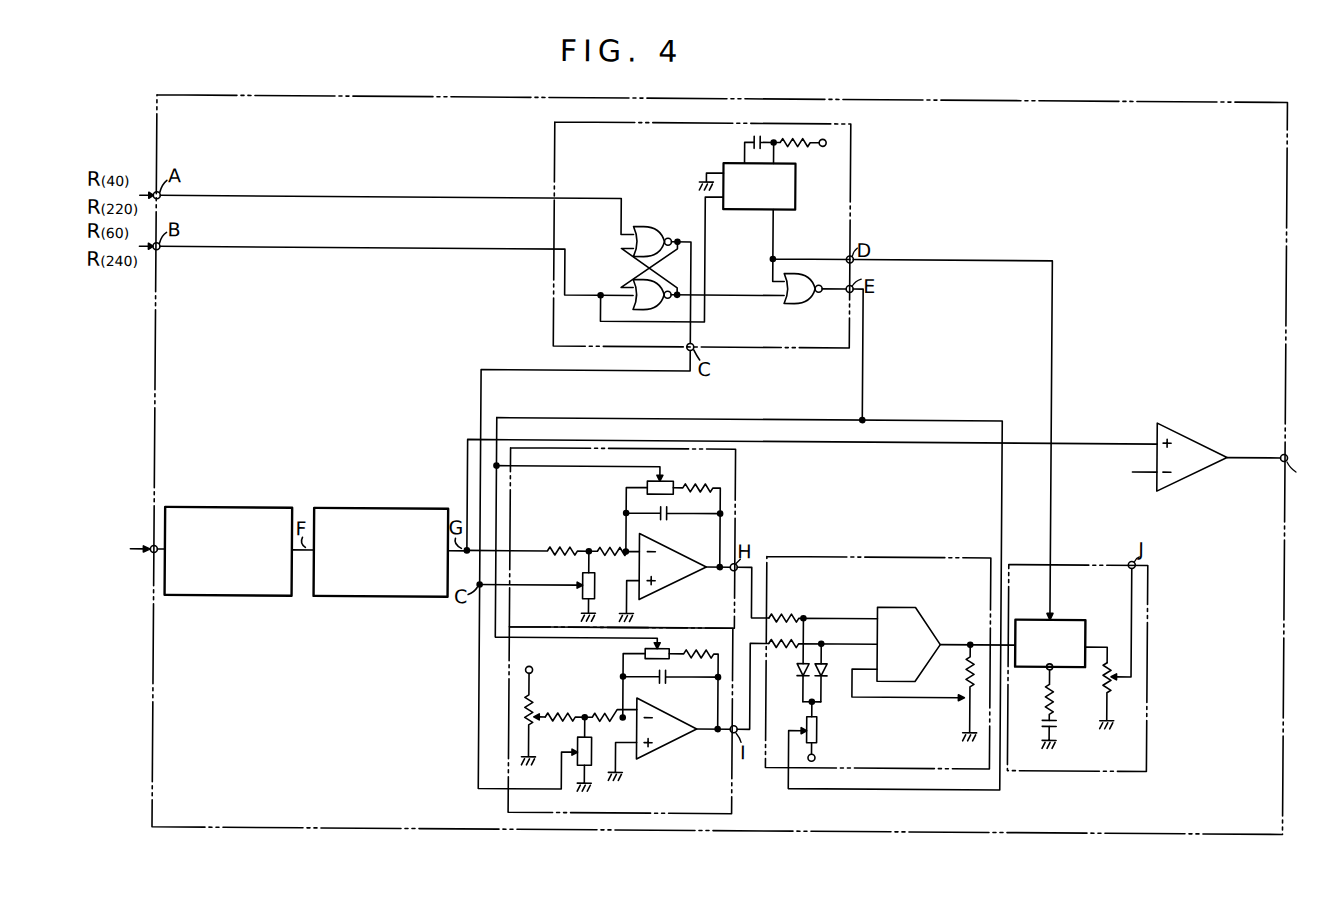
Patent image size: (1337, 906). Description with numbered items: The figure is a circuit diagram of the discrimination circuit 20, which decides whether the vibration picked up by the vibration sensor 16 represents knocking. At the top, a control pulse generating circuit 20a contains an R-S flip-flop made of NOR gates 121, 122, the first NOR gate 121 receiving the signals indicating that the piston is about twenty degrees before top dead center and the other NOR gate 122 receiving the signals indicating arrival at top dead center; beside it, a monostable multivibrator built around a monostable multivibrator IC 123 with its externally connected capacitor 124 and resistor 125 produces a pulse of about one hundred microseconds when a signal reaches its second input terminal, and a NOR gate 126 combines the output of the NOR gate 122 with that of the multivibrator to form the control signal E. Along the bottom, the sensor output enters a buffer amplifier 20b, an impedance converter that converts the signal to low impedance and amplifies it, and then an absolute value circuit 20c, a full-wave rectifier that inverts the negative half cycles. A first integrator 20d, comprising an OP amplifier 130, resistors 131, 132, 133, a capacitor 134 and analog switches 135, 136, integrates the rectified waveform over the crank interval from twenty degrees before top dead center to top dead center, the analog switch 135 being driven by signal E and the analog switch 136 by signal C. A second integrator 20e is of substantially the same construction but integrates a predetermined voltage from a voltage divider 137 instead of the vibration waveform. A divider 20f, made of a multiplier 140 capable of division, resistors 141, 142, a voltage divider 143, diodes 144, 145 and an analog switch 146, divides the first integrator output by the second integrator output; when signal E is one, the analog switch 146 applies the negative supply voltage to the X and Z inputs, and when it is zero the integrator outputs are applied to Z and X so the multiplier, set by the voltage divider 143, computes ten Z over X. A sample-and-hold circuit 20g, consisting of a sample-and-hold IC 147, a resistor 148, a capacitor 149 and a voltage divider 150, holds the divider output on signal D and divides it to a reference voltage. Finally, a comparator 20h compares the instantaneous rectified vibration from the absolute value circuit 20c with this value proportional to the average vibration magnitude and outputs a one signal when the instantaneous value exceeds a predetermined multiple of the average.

The discrimination circuit 20 is at (1109, 98).
The control pulse generating circuit 20a is at (850, 132).
The buffer amplifier 20b is at (246, 598).
The absolute value circuit 20c is at (391, 598).
The first integrator 20d is at (736, 527).
The second integrator 20e is at (734, 771).
The divider 20f is at (901, 556).
The sample-and-hold circuit 20g is at (1148, 640).
The comparator 20h is at (1199, 443).
The vibration sensor 16 is at (128, 549).
The NOR gate 121 is at (654, 232).
The NOR gate 122 is at (658, 313).
The monostable multivibrator IC 123 is at (796, 182).
The capacitor 124 is at (754, 134).
The resistor 125 is at (797, 146).
The NOR gate 126 is at (808, 301).
The OP amplifier 130 is at (689, 577).
The resistor 131 is at (560, 544).
The resistor 132 is at (617, 544).
The resistor 133 is at (699, 474).
The capacitor 134 is at (665, 518).
The analog switch 135 is at (647, 484).
The analog switch 136 is at (581, 580).
The voltage divider 137 is at (536, 704).
The multiplier 140 is at (928, 618).
The resistor 141 is at (786, 611).
The resistor 142 is at (796, 649).
The voltage divider 143 is at (962, 702).
The diode 144 is at (797, 679).
The diode 145 is at (826, 681).
The analog switch 146 is at (819, 736).
The sample-and-hold IC 147 is at (1086, 622).
The resistor 148 is at (1055, 682).
The capacitor 149 is at (1058, 723).
The voltage divider 150 is at (1114, 682).